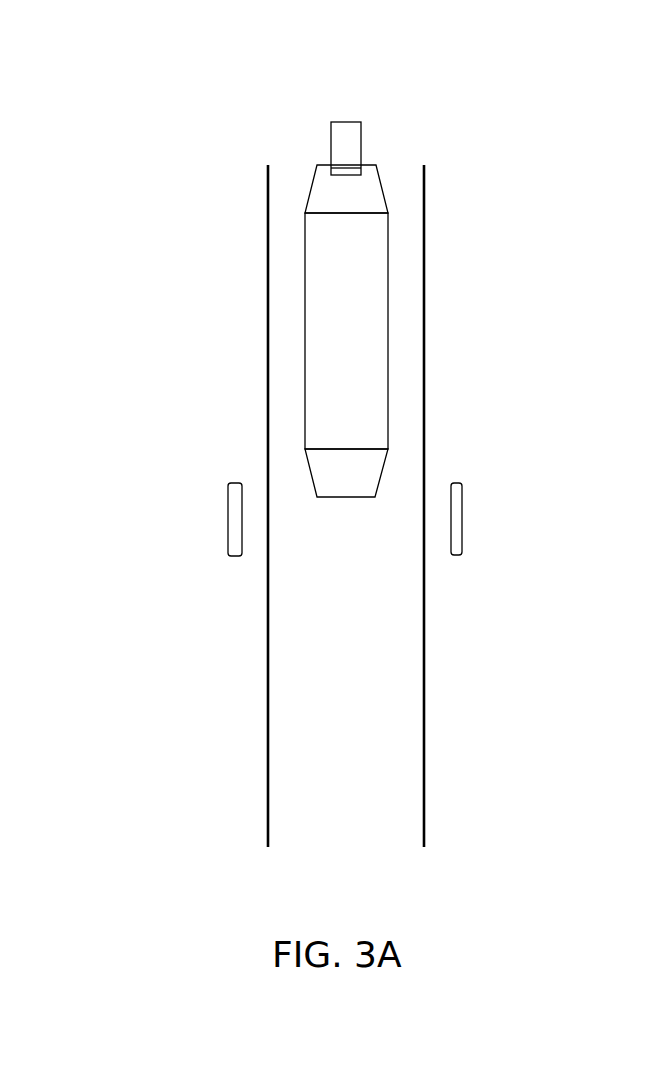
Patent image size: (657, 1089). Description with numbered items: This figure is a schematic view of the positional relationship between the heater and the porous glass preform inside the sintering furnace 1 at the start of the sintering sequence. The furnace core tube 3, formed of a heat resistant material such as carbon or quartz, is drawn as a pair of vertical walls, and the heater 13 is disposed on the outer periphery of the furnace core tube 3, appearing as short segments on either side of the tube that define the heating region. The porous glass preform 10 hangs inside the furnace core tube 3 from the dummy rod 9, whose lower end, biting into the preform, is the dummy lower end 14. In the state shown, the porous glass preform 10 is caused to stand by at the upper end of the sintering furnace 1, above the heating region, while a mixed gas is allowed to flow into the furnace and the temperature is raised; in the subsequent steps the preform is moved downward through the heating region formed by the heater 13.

The sintering furnace 1 is at (182, 360).
The furnace core tube 3 is at (424, 718).
The dummy rod 9 is at (361, 136).
The porous glass preform 10 is at (387, 390).
The heater 13 is at (462, 528).
The dummy lower end 14 is at (365, 170).